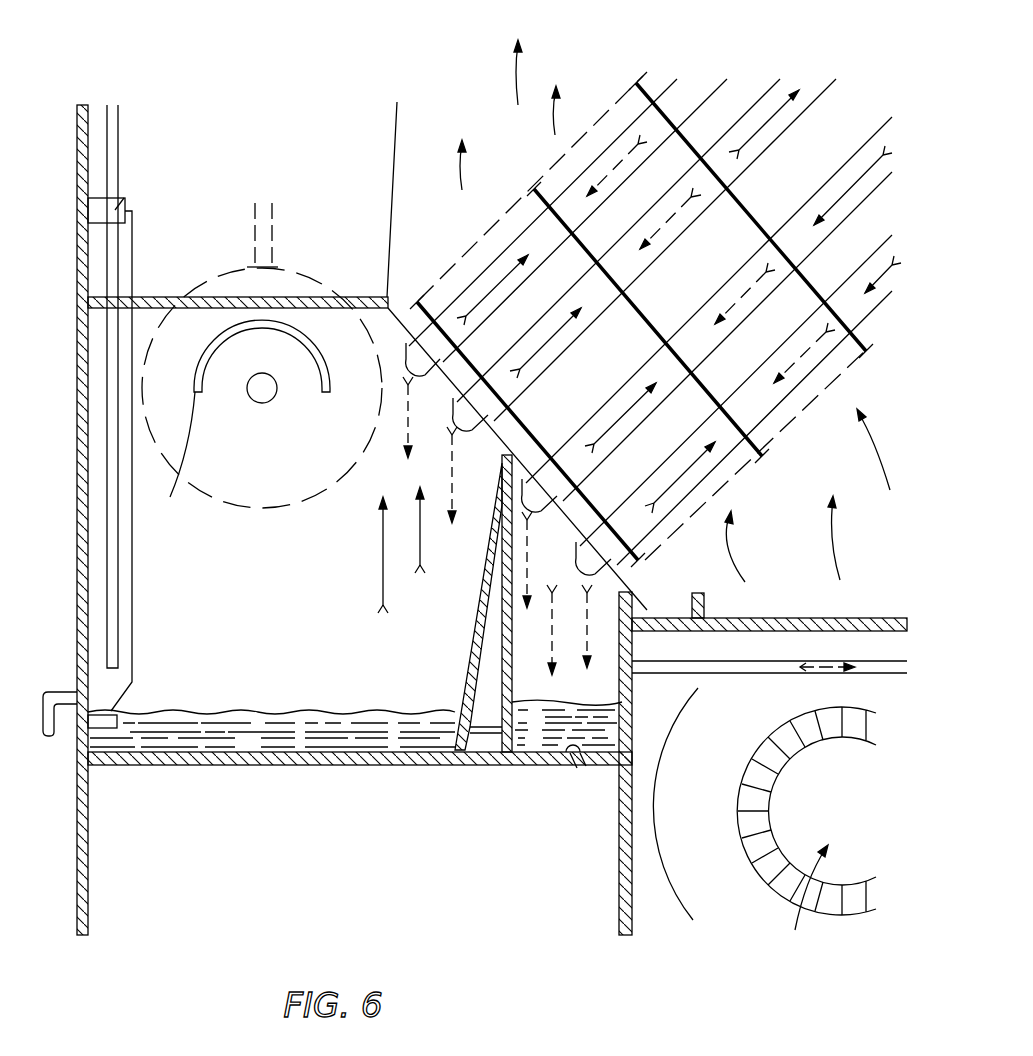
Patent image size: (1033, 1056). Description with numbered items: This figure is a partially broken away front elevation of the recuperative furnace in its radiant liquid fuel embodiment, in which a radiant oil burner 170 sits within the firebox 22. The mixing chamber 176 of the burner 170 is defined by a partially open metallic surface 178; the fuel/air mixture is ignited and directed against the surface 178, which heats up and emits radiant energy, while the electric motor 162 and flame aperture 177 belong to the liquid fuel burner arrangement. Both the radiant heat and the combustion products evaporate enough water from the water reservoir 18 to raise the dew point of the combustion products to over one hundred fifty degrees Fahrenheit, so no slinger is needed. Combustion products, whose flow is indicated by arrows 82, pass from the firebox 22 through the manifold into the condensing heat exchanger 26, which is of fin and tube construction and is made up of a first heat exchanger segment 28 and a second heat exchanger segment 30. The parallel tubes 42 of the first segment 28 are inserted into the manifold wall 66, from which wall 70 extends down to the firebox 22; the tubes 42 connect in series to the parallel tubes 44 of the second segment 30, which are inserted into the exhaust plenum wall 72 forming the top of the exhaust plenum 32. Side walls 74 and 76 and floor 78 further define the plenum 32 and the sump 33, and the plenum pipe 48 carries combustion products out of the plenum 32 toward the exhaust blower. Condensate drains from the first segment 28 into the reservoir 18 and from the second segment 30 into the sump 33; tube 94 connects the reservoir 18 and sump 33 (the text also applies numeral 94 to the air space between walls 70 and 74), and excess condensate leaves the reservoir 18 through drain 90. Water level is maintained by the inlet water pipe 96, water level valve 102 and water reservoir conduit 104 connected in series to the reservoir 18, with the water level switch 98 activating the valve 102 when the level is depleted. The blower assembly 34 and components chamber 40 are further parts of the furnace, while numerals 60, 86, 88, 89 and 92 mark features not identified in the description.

The water reservoir 18 is at (245, 735).
The firebox 22 is at (162, 582).
The condensing heat exchanger 26 is at (772, 515).
The first heat exchanger segment 28 is at (447, 266).
The second heat exchanger segment 30 is at (685, 545).
The exhaust plenum 32 is at (533, 680).
The sump 33 is at (598, 730).
The blower assembly 34 is at (697, 898).
The components chamber 40 is at (172, 248).
The parallel tubes 42 is at (462, 437).
The parallel tubes 44 is at (590, 570).
The plenum pipe 48 is at (745, 668).
The spray pipe 60 is at (275, 232).
The manifold wall 66 is at (458, 389).
The wall 70 is at (470, 609).
The exhaust plenum wall 72 is at (563, 523).
The side wall 74 is at (513, 650).
The side wall 76 is at (620, 698).
The floor 78 is at (568, 760).
The arrows 82 is at (492, 290).
The air stream 86 is at (845, 547).
The air flow path 88 is at (655, 875).
The flow passage 89 is at (613, 167).
The drain tube 90 is at (55, 690).
The float 92 is at (488, 718).
The tube 94 is at (485, 738).
The inlet water pipe 96 is at (118, 122).
The water level switch 98 is at (97, 726).
The water level valve 102 is at (117, 207).
The water reservoir conduit 104 is at (107, 487).
The electric motor 162 is at (296, 510).
The radiant oil burner 170 is at (222, 503).
The mixing chamber 176 is at (292, 383).
The flame aperture 177 is at (268, 402).
The partially open metallic surface 178 is at (169, 456).